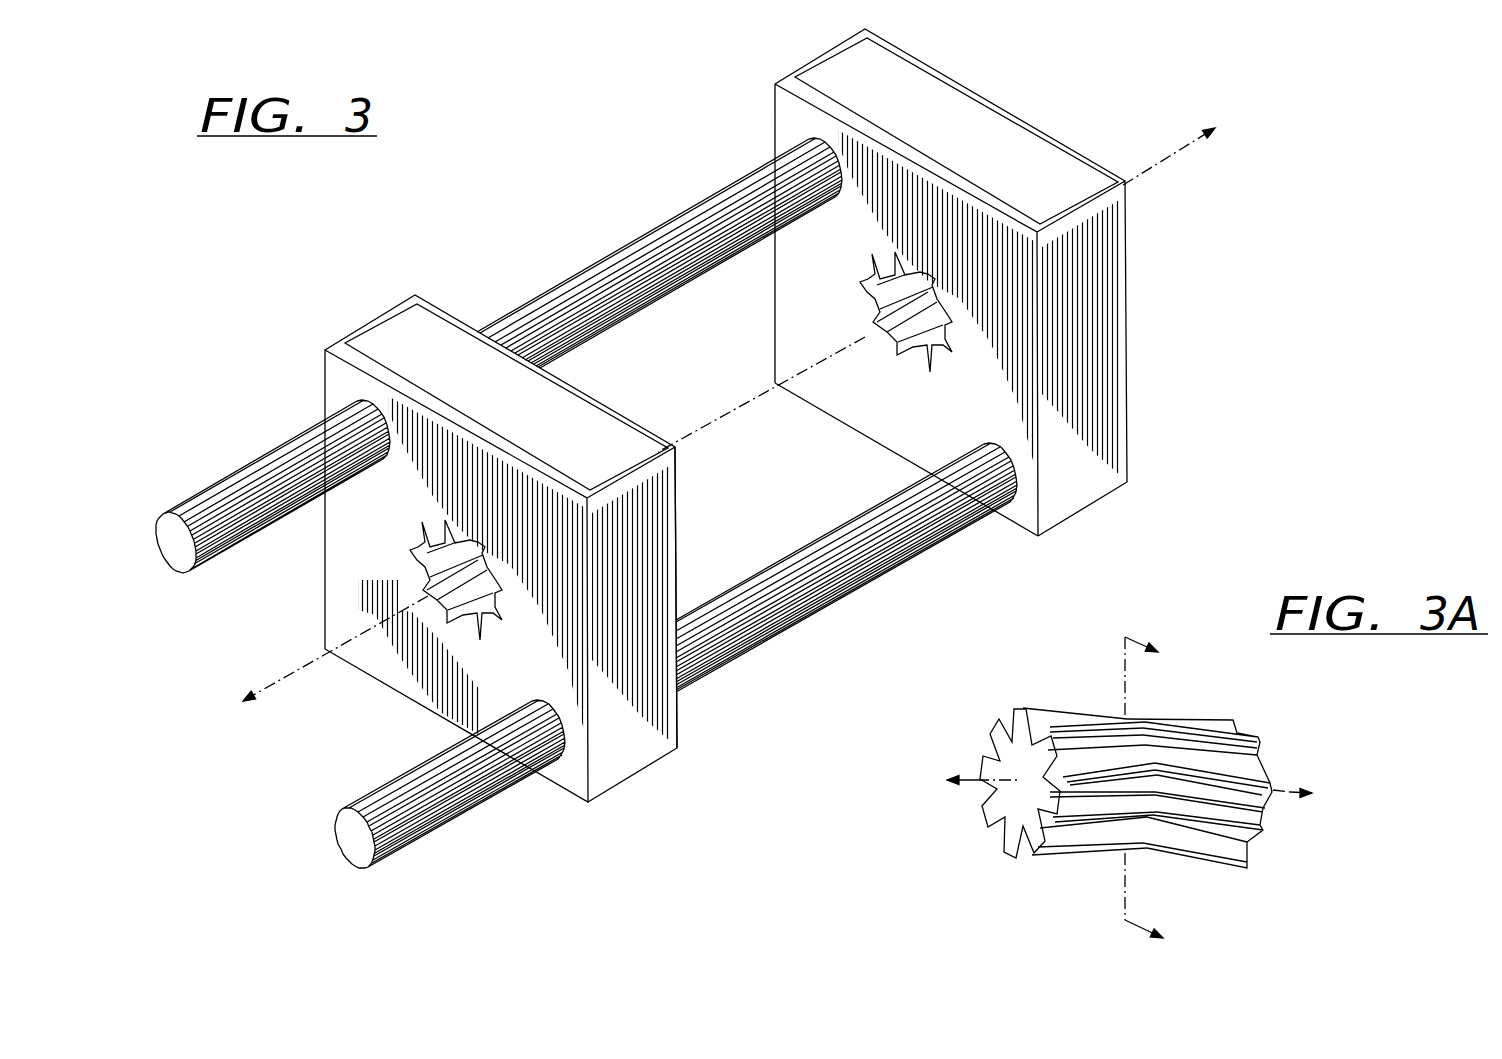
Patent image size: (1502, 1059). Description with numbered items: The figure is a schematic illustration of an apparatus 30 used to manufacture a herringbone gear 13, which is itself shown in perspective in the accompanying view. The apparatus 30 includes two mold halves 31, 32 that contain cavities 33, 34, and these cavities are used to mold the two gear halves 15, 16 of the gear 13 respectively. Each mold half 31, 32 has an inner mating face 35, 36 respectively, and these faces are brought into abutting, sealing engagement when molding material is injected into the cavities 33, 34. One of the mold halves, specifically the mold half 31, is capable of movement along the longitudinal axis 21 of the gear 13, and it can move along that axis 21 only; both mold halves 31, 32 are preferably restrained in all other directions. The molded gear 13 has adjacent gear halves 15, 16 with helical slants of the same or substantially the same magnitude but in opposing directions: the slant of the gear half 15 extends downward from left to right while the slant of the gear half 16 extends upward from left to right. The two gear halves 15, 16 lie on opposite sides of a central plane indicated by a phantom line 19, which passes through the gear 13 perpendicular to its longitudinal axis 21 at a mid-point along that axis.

In FIG. 3A, the herringbone gear 13 is at (1167, 685).
In FIG. 3A, the gear half 15 is at (1045, 708).
In FIG. 3A, the gear half 16 is at (1195, 717).
In FIG. 3A, the central plane line 19 is at (1122, 670).
In FIG. 3, the longitudinal axis 21 is at (286, 660).
In FIG. 3A, the longitudinal axis 21 is at (977, 780).
In FIG. 3, the apparatus 30 is at (550, 215).
In FIG. 3, the mold half 31 is at (360, 323).
In FIG. 3, the mold half 32 is at (803, 61).
In FIG. 3, the cavity 33 is at (421, 556).
In FIG. 3, the cavity 34 is at (874, 307).
In FIG. 3, the inner mating face 35 is at (676, 513).
In FIG. 3, the inner mating face 36 is at (922, 425).